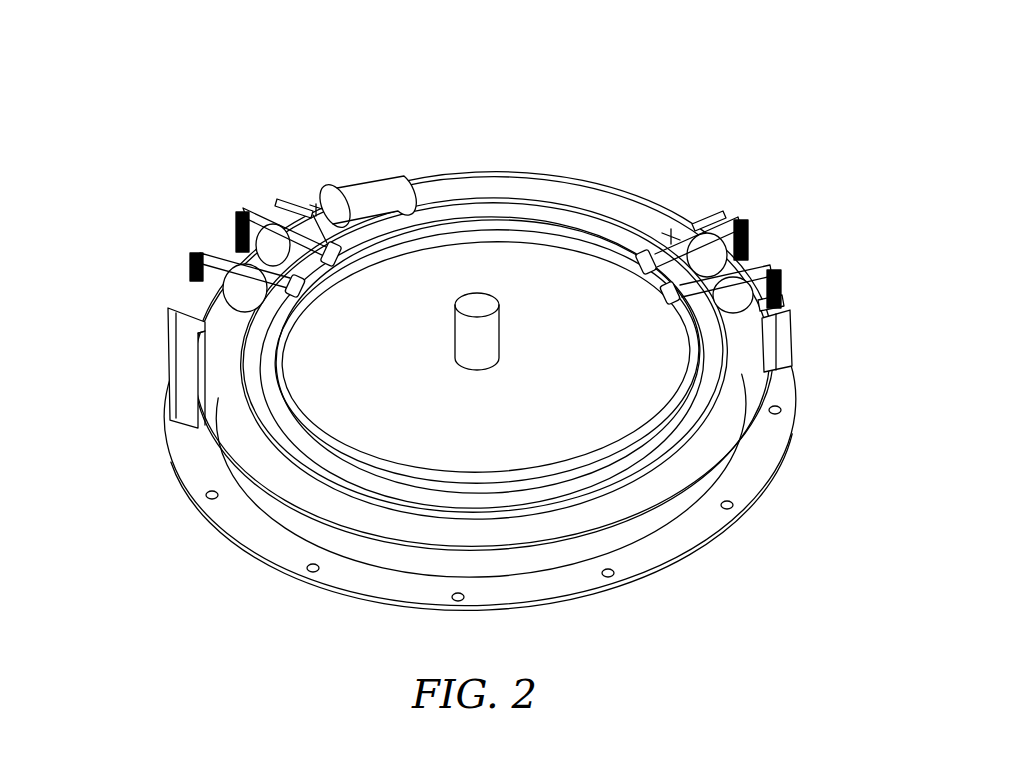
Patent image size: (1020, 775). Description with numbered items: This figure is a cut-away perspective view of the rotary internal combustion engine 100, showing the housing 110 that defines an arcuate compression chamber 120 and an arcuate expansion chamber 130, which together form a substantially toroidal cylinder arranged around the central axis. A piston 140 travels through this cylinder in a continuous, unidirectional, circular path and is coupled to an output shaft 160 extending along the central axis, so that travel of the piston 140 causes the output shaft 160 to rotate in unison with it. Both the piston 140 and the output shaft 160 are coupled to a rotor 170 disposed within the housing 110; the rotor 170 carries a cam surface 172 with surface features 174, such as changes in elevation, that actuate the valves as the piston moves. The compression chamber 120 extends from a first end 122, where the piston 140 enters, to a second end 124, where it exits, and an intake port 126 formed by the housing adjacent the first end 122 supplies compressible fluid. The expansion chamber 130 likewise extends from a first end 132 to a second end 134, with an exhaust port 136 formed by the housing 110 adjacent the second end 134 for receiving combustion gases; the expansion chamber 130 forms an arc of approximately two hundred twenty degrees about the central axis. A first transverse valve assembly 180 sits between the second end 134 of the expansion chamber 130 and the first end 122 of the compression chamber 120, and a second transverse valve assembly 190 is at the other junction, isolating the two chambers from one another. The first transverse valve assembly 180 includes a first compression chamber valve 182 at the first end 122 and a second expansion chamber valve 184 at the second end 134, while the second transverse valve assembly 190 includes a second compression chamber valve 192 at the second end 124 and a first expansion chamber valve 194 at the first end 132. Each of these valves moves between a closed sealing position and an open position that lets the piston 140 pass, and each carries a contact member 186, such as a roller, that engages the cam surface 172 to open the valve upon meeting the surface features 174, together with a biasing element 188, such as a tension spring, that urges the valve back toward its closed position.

The rotary internal combustion engine 100 is at (176, 103).
The housing 110 is at (688, 556).
The compression chamber 120 is at (468, 183).
The first end of the compression chamber 122 is at (303, 220).
The second end of the compression chamber 124 is at (700, 237).
The intake port 126 is at (268, 225).
The expansion chamber 130 is at (698, 445).
The first end of the expansion chamber 132 is at (787, 320).
The second end of the expansion chamber 134 is at (173, 392).
The exhaust port 136 is at (160, 307).
The piston 140 is at (372, 185).
The output shaft 160 is at (493, 297).
The rotor 170 is at (542, 208).
The cam surface 172 is at (647, 412).
The surface features 174 is at (392, 220).
The first transverse valve assembly 180 is at (217, 279).
The first compression chamber valve 182 is at (240, 212).
The second expansion chamber valve 184 is at (193, 253).
The contact member 186 is at (303, 283).
The biasing element 188 is at (230, 243).
The second transverse valve assembly 190 is at (762, 275).
The second compression chamber valve 192 is at (740, 222).
The first expansion chamber valve 194 is at (780, 268).